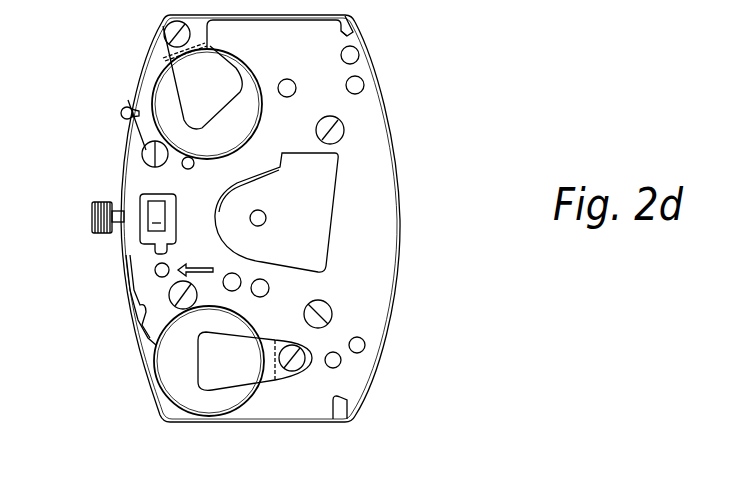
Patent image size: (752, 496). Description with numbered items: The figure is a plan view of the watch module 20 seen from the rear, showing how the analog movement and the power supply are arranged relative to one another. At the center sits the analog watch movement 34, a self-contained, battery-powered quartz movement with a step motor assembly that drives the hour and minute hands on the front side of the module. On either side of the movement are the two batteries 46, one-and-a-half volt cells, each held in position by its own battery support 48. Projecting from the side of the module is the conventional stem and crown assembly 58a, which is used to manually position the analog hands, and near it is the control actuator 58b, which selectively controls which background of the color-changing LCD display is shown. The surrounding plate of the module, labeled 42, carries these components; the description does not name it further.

The watch module 20 is at (405, 78).
The analog watch movement 34 is at (295, 226).
The main plate 42 is at (357, 310).
The batteries 46 is at (170, 105).
The battery supports 48 is at (219, 102).
The stem and crown assembly 58a is at (90, 212).
The control actuator 58b is at (120, 111).